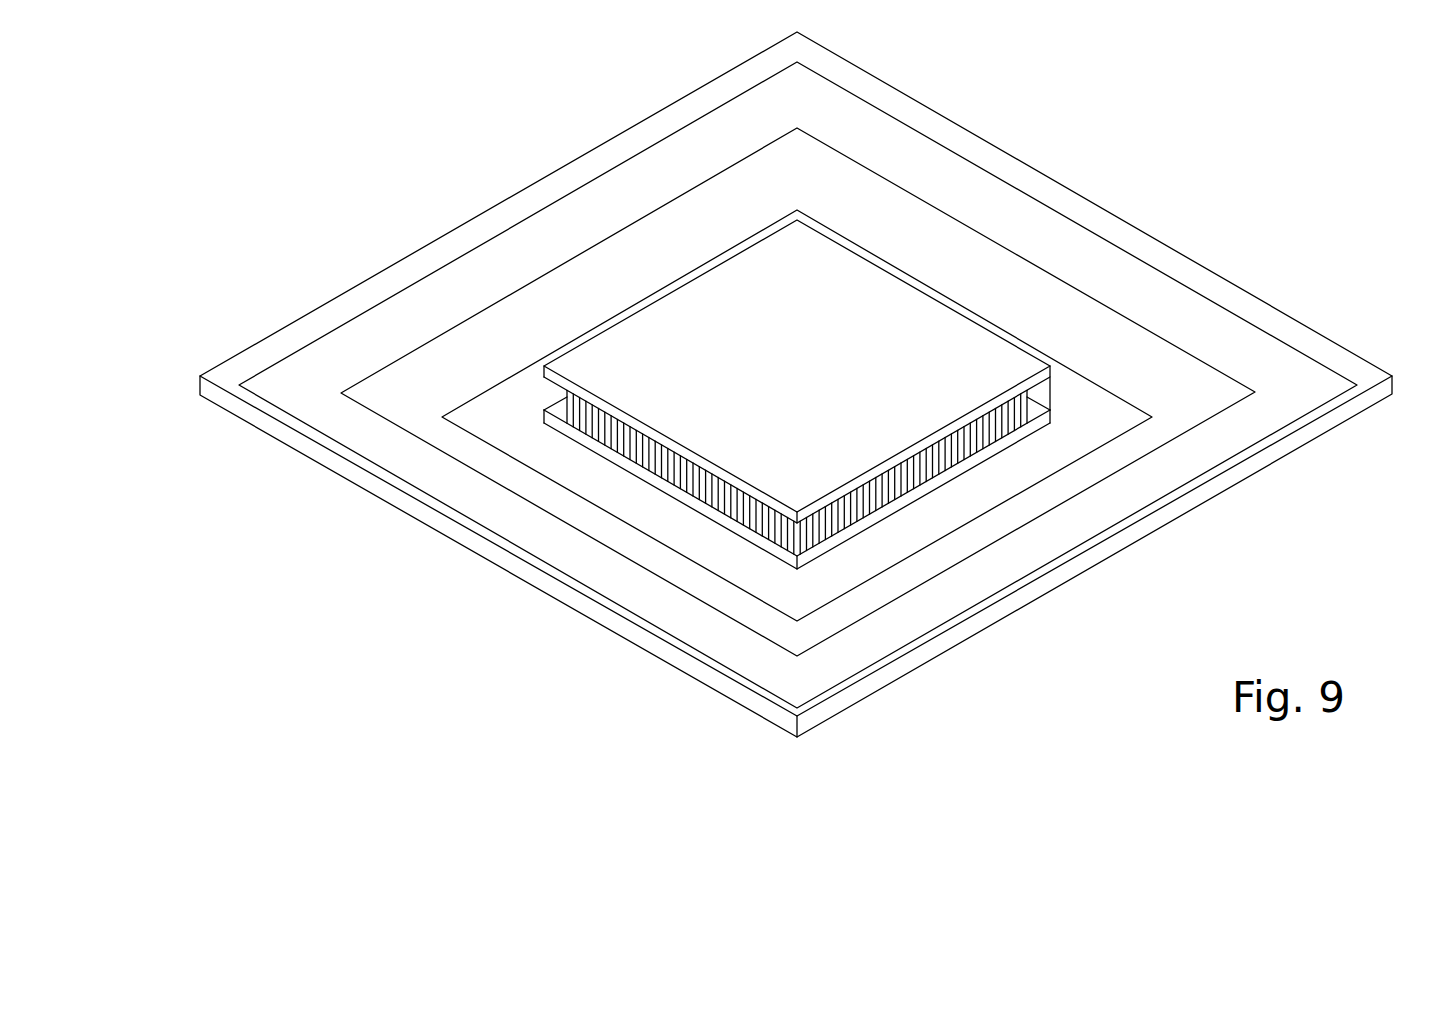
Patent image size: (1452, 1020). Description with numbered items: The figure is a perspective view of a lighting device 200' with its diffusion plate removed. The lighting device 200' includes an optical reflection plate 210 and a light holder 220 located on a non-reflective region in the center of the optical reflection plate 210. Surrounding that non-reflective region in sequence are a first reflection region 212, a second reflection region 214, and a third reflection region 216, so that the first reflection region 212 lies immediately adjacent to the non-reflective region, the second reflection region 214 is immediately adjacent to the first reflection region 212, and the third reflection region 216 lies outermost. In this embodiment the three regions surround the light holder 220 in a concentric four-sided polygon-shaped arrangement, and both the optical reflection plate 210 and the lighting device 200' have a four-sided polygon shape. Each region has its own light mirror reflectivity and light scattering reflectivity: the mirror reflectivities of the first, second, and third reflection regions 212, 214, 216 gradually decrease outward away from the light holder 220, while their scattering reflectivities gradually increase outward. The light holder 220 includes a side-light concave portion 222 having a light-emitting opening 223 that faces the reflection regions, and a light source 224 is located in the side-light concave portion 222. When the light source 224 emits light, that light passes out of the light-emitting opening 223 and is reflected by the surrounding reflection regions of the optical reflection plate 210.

The lighting device 200' is at (796, 379).
The optical reflection plate 210 is at (854, 78).
The first reflection region 212 is at (738, 198).
The second reflection region 214 is at (597, 290).
The third reflection region 216 is at (470, 288).
The light holder 220 is at (882, 309).
The side-light concave portion 222 is at (860, 512).
The light-emitting opening 223 is at (1043, 392).
The light source 224 is at (953, 446).